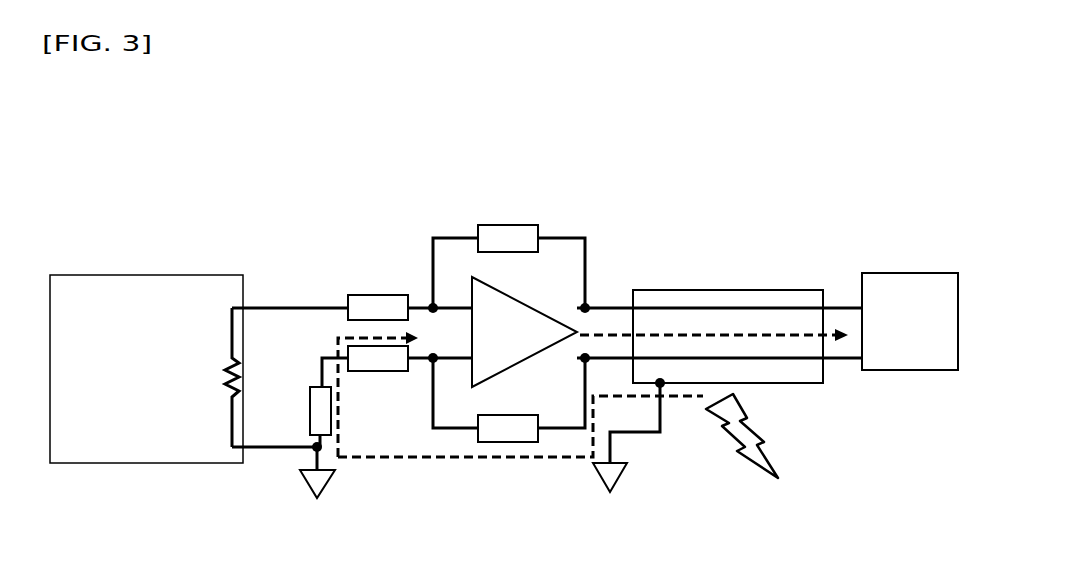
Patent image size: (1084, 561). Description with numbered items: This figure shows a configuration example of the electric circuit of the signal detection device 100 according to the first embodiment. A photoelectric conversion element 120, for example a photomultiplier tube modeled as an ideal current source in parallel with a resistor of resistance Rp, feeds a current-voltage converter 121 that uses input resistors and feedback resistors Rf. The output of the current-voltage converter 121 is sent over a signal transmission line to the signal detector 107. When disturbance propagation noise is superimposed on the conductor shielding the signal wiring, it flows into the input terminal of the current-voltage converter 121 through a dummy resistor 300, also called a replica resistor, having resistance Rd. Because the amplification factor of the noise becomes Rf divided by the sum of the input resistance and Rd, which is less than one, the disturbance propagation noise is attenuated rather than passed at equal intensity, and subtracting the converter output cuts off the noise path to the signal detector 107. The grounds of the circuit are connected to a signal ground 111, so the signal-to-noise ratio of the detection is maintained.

The signal detection device 100 is at (688, 147).
The signal detector 107 is at (914, 273).
The signal ground 111 is at (323, 492).
The photoelectric conversion element 120 is at (105, 275).
The current-voltage converter 121 is at (543, 215).
The dummy resistor 300 is at (305, 428).